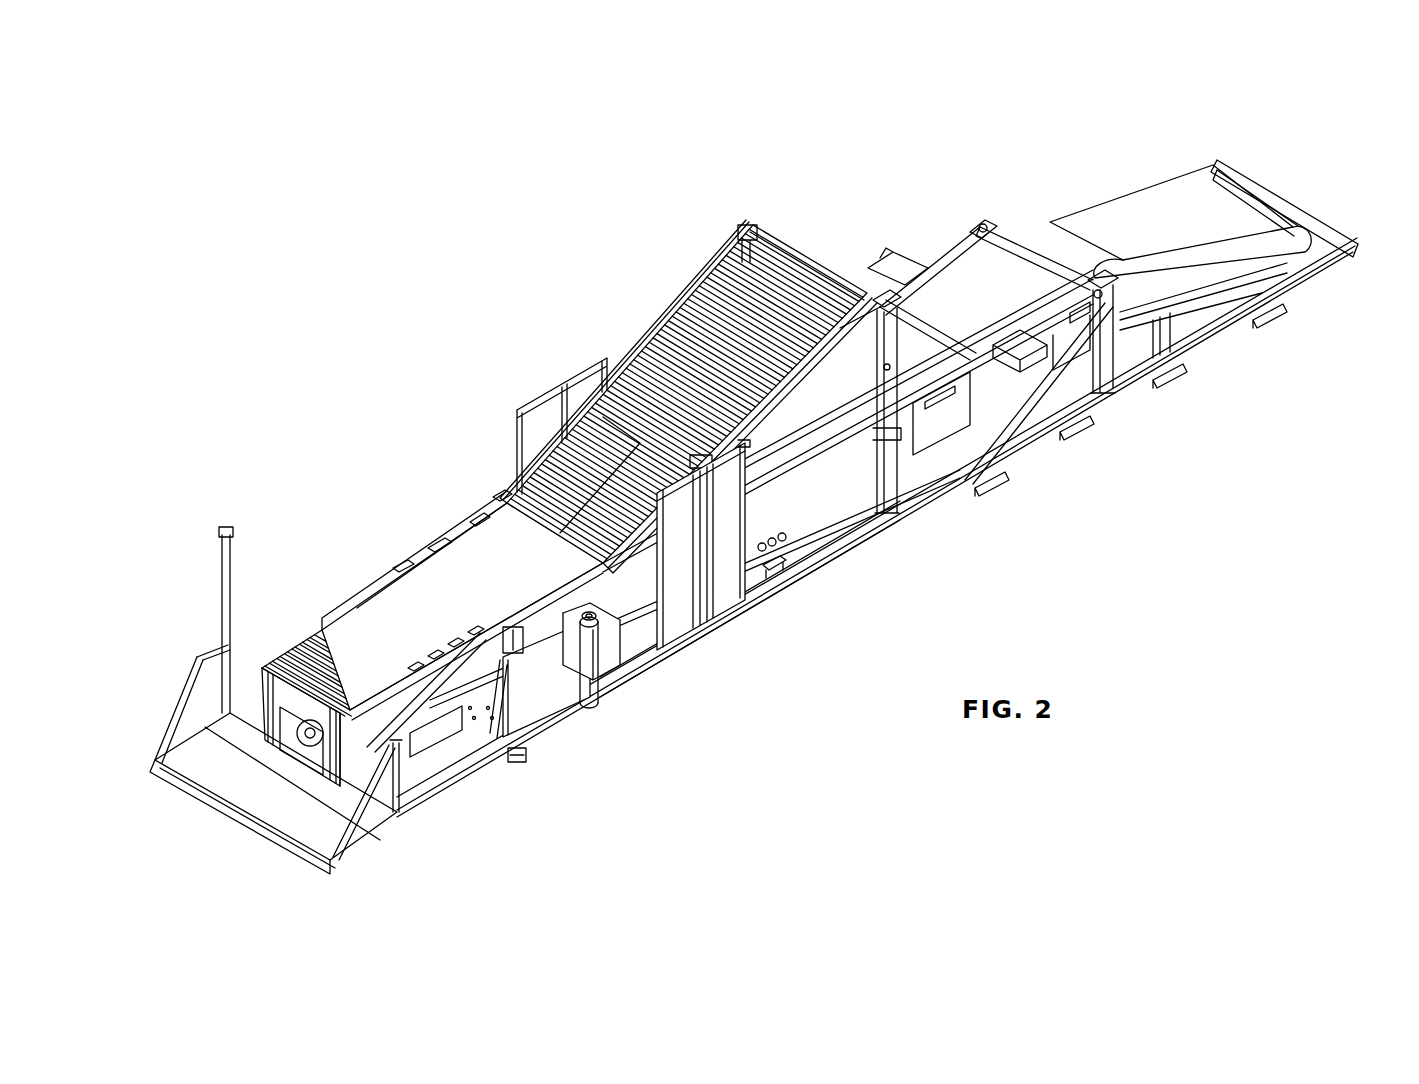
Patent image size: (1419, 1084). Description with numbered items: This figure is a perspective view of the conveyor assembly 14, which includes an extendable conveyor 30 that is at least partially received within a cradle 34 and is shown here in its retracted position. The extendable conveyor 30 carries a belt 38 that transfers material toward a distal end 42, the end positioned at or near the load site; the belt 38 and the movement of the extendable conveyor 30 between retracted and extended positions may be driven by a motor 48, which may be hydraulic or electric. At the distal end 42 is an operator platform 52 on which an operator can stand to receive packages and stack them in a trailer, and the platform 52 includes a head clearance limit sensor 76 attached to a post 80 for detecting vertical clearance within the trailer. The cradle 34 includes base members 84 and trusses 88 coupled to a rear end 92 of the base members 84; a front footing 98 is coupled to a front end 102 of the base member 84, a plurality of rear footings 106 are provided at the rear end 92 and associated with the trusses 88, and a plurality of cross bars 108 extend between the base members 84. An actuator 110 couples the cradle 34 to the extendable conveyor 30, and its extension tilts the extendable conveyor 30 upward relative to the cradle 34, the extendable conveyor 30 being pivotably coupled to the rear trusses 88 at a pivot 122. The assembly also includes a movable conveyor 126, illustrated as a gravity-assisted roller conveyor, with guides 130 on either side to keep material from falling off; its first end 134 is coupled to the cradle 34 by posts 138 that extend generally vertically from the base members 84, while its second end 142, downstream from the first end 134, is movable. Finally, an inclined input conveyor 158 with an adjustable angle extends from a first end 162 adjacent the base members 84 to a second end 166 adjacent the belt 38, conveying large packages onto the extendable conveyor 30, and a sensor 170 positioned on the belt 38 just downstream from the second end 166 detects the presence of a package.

The conveyor assembly 14 is at (212, 196).
The extendable conveyor 30 is at (346, 580).
The cradle 34 is at (795, 578).
The belt 38 is at (480, 563).
The distal end 42 is at (179, 660).
The motor 48 is at (590, 640).
The operator platform 52 is at (178, 745).
The head clearance limit sensor 76 is at (225, 527).
The post 80 is at (220, 568).
The base members 84 is at (750, 608).
The trusses 88 is at (973, 228).
The rear end 92 is at (1333, 185).
The front footing 98 is at (527, 760).
The front end 102 is at (466, 805).
The rear footings 106 is at (1280, 323).
The cross bars 108 is at (768, 575).
The actuator 110 is at (530, 650).
The pivot 122 is at (988, 225).
The movable conveyor 126 is at (705, 297).
The guides 130 is at (535, 437).
The first end 134 is at (790, 207).
The posts 138 is at (887, 367).
The second end 142 is at (484, 485).
The input conveyor 158 is at (1128, 218).
The first end 162 is at (1287, 215).
The second end 166 is at (1027, 248).
The sensor 170 is at (886, 258).